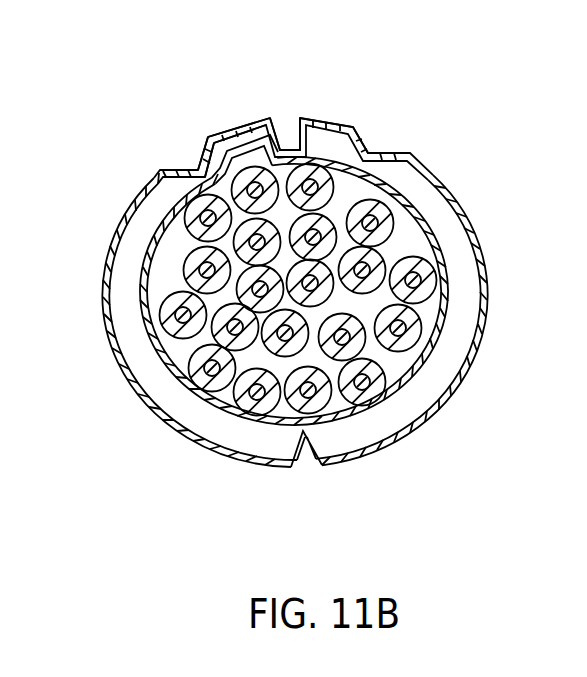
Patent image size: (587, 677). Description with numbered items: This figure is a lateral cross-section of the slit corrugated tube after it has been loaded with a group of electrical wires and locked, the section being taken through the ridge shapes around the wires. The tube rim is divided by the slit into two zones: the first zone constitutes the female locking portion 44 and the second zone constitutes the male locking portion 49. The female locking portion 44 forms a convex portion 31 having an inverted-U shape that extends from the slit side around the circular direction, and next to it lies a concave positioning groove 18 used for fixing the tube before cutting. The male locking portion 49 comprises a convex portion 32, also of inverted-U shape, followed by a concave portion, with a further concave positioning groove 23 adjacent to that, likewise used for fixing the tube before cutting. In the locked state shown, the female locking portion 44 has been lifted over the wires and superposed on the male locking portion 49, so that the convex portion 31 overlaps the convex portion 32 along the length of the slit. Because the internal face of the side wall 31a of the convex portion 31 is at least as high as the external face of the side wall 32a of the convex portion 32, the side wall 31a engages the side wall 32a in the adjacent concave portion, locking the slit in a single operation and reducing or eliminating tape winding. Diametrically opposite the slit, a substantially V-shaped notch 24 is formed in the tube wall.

The concave positioning groove 18 is at (176, 152).
The concave positioning groove 23 is at (374, 142).
The V-shaped notch 24 is at (303, 437).
The convex portion 31 is at (232, 126).
The side wall 31a is at (284, 138).
The convex portion 32 is at (222, 172).
The side wall 32a is at (210, 129).
The female locking portion 44 is at (208, 118).
The male locking portion 49 is at (308, 112).